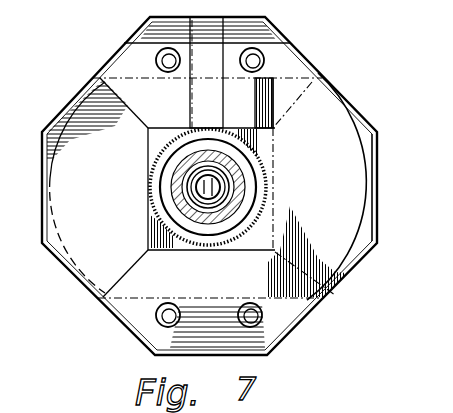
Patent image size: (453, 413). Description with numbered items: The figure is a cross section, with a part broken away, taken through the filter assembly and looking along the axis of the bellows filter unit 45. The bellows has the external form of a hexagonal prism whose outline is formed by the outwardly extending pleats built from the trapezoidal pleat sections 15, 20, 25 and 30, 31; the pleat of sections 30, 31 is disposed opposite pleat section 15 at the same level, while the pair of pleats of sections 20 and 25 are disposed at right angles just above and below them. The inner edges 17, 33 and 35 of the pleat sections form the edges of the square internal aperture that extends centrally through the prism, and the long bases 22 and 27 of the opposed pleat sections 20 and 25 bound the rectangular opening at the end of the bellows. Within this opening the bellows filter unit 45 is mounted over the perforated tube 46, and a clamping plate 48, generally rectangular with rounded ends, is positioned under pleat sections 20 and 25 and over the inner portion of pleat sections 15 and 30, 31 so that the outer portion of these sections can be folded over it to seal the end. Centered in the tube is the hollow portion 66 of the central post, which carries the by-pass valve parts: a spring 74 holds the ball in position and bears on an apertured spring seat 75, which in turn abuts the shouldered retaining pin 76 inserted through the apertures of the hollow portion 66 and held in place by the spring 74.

The trapezoidal pleat section 20 is at (65, 186).
The bellows filter unit 45 is at (292, 42).
The inner edge 33 is at (166, 129).
The inner edge 17 is at (163, 253).
The trapezoidal pleat section 30 is at (137, 86).
The trapezoidal pleat section 31 is at (252, 101).
The long base 22 is at (147, 155).
The long base 27 is at (275, 160).
The inner edge 35 is at (257, 140).
The trapezoidal pleat section 15 is at (238, 251).
The tube 46 is at (277, 198).
The clamping plate 48 is at (362, 184).
The trapezoidal pleat section 25 is at (371, 233).
The spring 74 is at (178, 182).
The apertured spring seat 75 is at (183, 196).
The hollow portion 66 is at (177, 219).
The shouldered retaining pin 76 is at (202, 197).